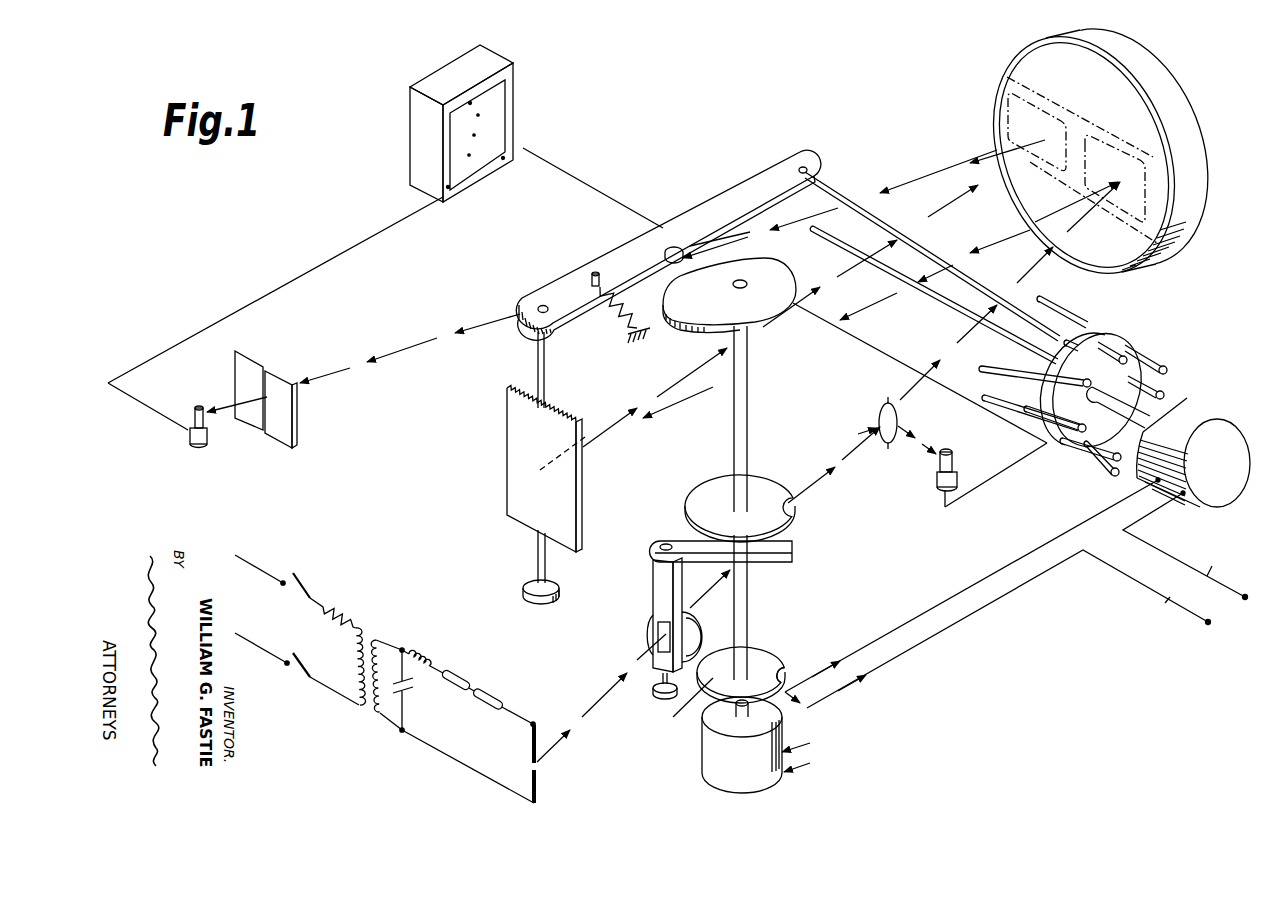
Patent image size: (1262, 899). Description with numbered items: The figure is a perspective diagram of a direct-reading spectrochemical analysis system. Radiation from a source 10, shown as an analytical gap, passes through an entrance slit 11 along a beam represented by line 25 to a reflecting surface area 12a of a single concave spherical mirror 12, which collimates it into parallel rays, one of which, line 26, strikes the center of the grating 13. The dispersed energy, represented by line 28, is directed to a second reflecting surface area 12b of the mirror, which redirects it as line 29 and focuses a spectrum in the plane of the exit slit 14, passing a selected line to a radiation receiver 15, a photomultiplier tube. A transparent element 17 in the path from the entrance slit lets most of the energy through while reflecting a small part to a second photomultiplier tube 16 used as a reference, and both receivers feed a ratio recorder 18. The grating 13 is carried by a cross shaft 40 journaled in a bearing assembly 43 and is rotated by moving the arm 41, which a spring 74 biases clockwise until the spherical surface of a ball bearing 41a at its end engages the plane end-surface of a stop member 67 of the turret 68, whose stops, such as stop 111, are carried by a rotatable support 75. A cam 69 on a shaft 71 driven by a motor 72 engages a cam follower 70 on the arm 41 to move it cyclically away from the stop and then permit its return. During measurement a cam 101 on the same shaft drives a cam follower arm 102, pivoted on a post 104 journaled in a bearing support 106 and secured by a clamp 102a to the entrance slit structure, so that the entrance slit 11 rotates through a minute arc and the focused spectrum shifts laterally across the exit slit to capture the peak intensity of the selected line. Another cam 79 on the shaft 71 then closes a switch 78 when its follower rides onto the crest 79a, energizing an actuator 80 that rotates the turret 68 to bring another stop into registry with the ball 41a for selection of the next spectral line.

The source 10 is at (538, 765).
The entrance slit 11 is at (692, 628).
The concave spherical mirror 12 is at (1160, 122).
The reflecting surface area 12a is at (1137, 177).
The second reflecting surface area 12b is at (1022, 122).
The grating 13 is at (566, 495).
The exit slit 14 is at (266, 372).
The radiation receiver 15 is at (195, 405).
The second photomultiplier tube 16 is at (937, 480).
The transparent element 17 is at (876, 420).
The ratio recorder 18 is at (410, 134).
The line representing radiant energy beam 25 is at (817, 489).
The line representing collimated ray 26 is at (872, 305).
The line representing dispersed radiant energy 28 is at (946, 205).
The line representing redirected dispersed energy 29 is at (400, 350).
The cross shaft 40 is at (545, 369).
The arm 41 is at (740, 190).
The ball bearing 41a is at (808, 172).
The bearing assembly 43 is at (524, 587).
The stop member 67 is at (896, 229).
The turret 68 is at (1169, 343).
The cam 69 is at (692, 320).
The cam follower 70 is at (668, 258).
The shaft 71 is at (749, 416).
The motor 72 is at (712, 762).
The spring 74 is at (627, 327).
The rotatable support 75 is at (1106, 334).
The switch 78 is at (815, 708).
The cam 79 is at (712, 683).
The crest 79a is at (772, 668).
The actuator 80 is at (1218, 488).
The cam 101 is at (753, 483).
The cam follower arm 102 is at (692, 546).
The clamp 102a is at (660, 545).
The post 104 is at (660, 600).
The bearing support 106 is at (655, 696).
The stop 111 is at (830, 244).